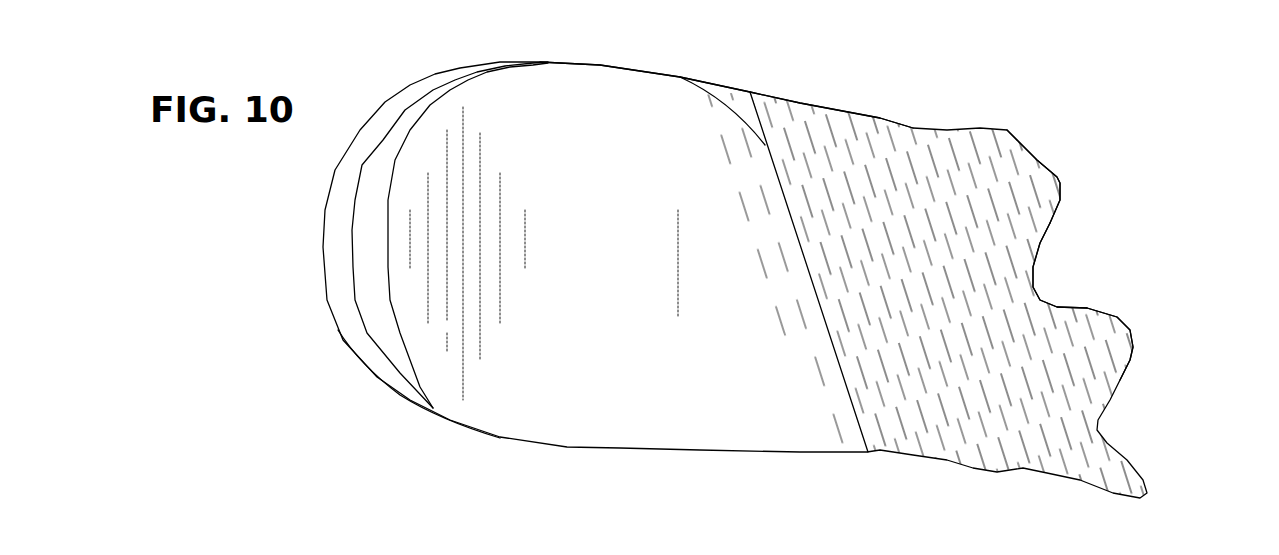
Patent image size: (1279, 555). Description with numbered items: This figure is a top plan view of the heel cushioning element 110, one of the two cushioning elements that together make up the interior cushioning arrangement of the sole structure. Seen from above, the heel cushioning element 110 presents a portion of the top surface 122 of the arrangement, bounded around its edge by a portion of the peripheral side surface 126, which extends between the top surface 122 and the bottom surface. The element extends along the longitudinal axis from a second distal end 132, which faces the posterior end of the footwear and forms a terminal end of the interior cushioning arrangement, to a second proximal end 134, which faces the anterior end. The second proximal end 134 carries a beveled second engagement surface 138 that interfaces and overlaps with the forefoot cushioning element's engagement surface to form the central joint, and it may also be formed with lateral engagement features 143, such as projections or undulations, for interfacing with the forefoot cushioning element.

The heel cushioning element 110 is at (1060, 108).
The top surface 122 is at (557, 143).
The peripheral side surface 126 is at (600, 65).
The second distal end 132 is at (322, 247).
The second proximal end 134 is at (1088, 308).
The second engagement surface 138 is at (935, 165).
The lateral engagement features 143 is at (1060, 183).